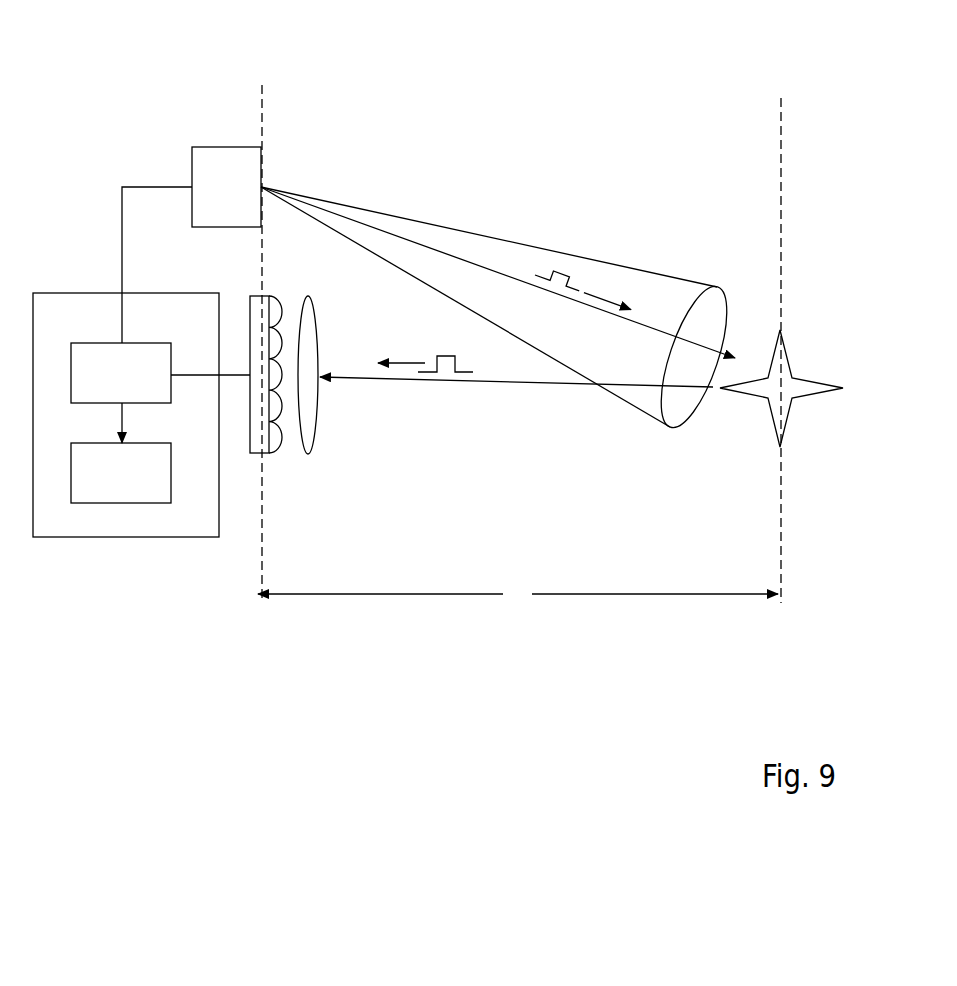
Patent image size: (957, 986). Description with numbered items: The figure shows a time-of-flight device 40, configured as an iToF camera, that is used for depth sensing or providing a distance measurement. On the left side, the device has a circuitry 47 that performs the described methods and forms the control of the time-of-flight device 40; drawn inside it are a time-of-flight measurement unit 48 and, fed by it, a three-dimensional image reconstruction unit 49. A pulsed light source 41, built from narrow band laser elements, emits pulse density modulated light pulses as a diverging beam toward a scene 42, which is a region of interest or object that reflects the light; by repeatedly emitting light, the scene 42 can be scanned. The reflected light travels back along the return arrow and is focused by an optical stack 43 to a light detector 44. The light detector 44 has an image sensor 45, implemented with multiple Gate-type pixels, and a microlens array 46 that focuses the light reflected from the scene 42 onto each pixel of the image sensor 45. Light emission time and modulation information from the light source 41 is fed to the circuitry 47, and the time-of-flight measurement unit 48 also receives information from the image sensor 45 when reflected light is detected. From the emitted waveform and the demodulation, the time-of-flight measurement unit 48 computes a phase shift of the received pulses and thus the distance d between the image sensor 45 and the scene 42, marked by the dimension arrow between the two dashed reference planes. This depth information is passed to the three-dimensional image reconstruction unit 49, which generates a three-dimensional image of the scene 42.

The time-of-flight device 40 is at (380, 60).
The pulsed light source 41 is at (240, 186).
The scene 42 is at (822, 412).
The optical stack 43 is at (323, 410).
The light detector 44 is at (294, 474).
The image sensor 45 is at (248, 453).
The microlens array 46 is at (274, 300).
The circuitry 47 is at (55, 292).
The time-of-flight measurement unit 48 is at (134, 378).
The 3D image reconstruction unit 49 is at (134, 476).